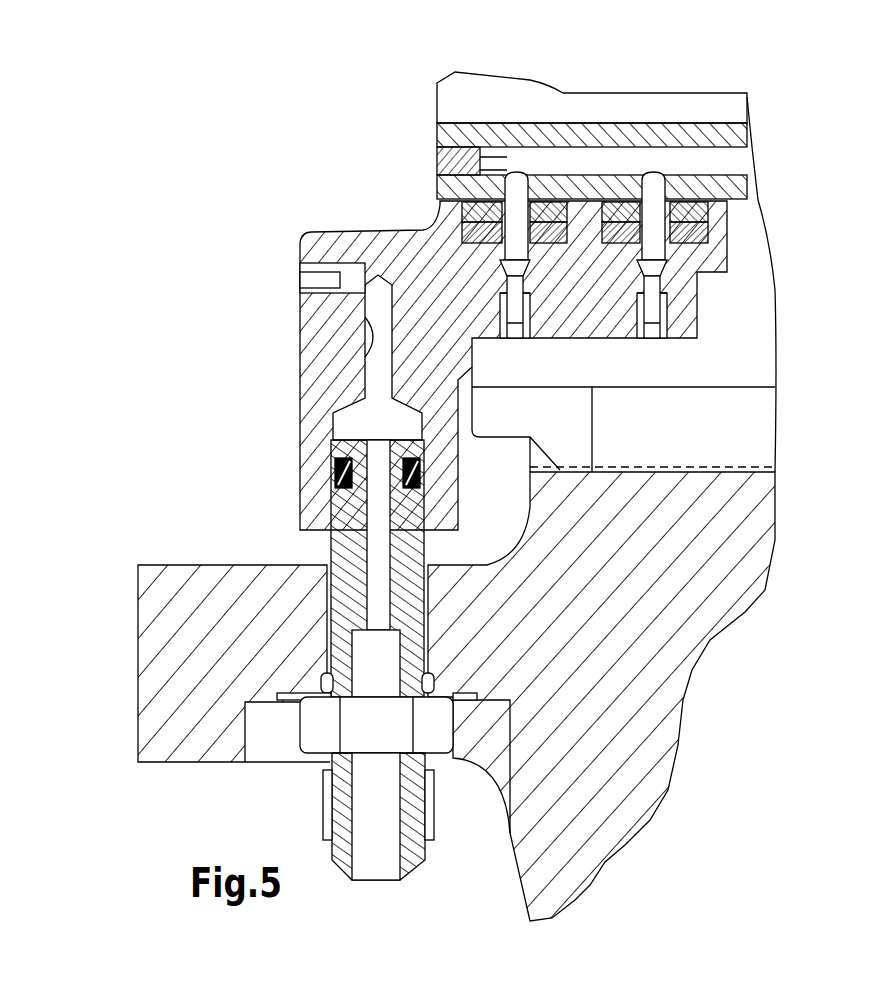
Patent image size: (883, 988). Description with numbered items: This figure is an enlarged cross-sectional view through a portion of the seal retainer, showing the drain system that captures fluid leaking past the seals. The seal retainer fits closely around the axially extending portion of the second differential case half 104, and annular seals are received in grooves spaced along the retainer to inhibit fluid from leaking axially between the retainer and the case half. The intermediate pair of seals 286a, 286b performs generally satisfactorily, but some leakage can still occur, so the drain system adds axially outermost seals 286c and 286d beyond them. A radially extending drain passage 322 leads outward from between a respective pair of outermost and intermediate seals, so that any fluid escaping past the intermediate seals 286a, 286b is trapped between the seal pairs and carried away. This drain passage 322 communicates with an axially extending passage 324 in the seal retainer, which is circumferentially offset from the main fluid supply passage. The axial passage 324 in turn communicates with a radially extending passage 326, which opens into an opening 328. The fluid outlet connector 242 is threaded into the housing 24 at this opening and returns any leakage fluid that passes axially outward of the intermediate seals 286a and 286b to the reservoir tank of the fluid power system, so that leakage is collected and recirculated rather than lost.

The second differential case half 104 is at (525, 92).
The drain passage 322 is at (520, 185).
The intermediate seal 286a is at (563, 193).
The intermediate seal 286b is at (620, 200).
The axially outermost seal 286c is at (440, 215).
The axially outermost seal 286d is at (700, 217).
The axial passage 324 is at (603, 285).
The radially extending passage 326 is at (365, 362).
The opening 328 is at (340, 458).
The housing 24 is at (650, 683).
The fluid outlet 242 is at (410, 850).